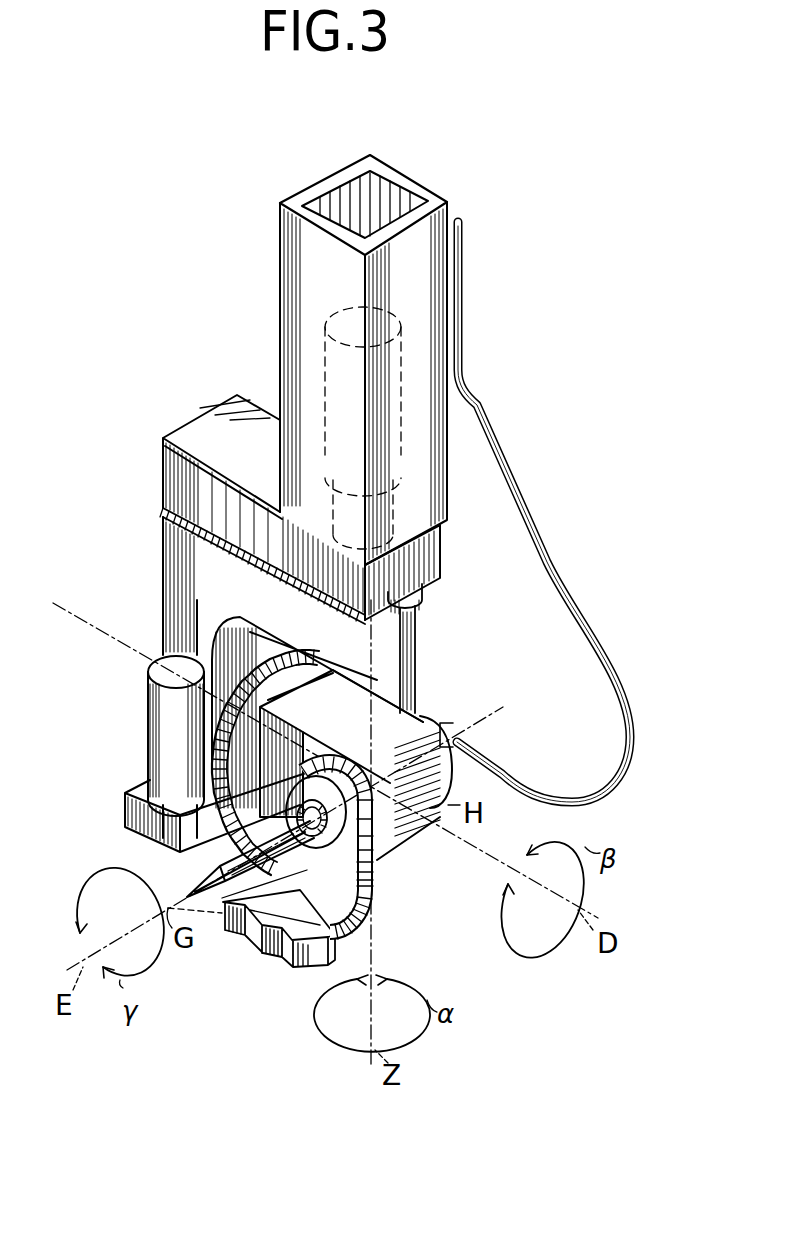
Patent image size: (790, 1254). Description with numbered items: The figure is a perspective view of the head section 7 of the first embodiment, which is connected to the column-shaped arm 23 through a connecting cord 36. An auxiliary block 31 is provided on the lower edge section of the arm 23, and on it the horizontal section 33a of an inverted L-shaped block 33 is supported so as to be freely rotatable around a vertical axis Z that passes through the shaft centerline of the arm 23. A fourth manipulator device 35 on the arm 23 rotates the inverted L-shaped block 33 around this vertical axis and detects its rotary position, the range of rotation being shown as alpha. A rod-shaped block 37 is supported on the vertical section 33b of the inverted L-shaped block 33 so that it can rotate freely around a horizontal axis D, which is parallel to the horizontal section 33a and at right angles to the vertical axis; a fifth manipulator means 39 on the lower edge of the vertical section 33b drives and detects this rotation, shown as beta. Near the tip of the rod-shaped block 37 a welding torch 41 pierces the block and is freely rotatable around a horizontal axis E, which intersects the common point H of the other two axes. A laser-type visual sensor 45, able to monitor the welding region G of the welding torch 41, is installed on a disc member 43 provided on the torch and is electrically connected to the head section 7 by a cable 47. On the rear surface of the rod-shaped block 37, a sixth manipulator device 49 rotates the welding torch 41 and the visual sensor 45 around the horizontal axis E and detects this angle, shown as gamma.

The head section 7 is at (139, 408).
The column-shaped arm 23 is at (293, 330).
The auxiliary block 31 is at (428, 560).
The inverted L-shaped block 33 is at (170, 530).
The horizontal section 33a is at (415, 612).
The vertical section 33b is at (177, 597).
The fourth manipulator device 35 is at (327, 323).
The connecting cord 36 is at (463, 262).
The rod-shaped block 37 is at (397, 825).
The fifth manipulator means 39 is at (153, 703).
The welding torch 41 is at (190, 888).
The disc member 43 is at (207, 850).
The laser-type visual sensor 45 is at (267, 960).
The cable 47 is at (372, 905).
The sixth manipulator device 49 is at (413, 678).